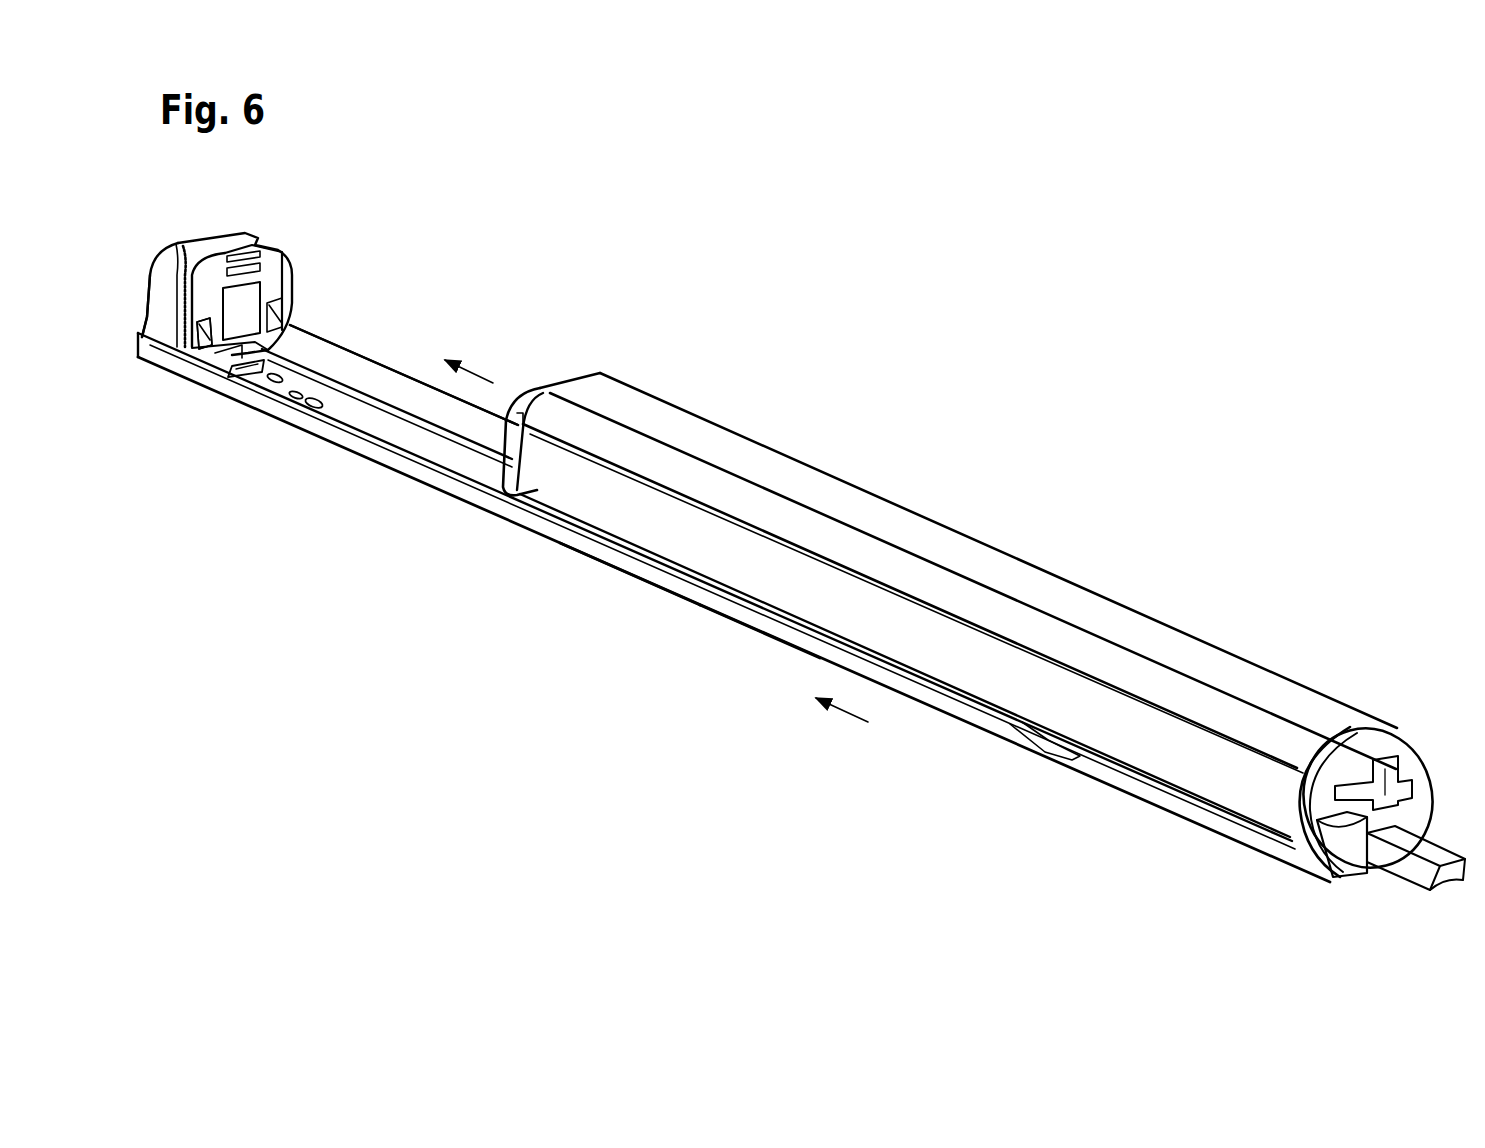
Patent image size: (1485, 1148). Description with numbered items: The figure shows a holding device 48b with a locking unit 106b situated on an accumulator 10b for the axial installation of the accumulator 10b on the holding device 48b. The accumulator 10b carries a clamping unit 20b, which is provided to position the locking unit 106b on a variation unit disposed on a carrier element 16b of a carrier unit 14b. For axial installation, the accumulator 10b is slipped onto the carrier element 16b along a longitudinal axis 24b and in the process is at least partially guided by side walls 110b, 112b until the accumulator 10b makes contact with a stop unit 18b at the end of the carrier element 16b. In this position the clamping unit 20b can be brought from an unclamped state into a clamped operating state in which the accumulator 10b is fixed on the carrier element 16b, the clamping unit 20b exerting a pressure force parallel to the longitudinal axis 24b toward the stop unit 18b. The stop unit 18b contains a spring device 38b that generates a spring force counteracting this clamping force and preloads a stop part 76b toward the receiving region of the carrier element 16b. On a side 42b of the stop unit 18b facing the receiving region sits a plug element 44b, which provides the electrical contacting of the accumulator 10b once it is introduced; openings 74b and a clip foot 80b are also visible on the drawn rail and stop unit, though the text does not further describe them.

The accumulator 10b is at (925, 527).
The carrier unit 14b is at (655, 628).
The carrier element 16b is at (482, 470).
The stop unit 18b is at (266, 212).
The clamping unit 20b is at (1352, 881).
The longitudinal axis 24b is at (845, 712).
The spring device 38b is at (160, 316).
The side 42b is at (276, 287).
The plug element 44b is at (236, 374).
The holding device 48b is at (566, 660).
The fastening holes 74b is at (303, 413).
The stop part 76b is at (265, 268).
The clip foot 80b is at (232, 323).
The locking unit 106b is at (1441, 753).
The side wall 110b is at (355, 370).
The side wall 112b is at (458, 487).